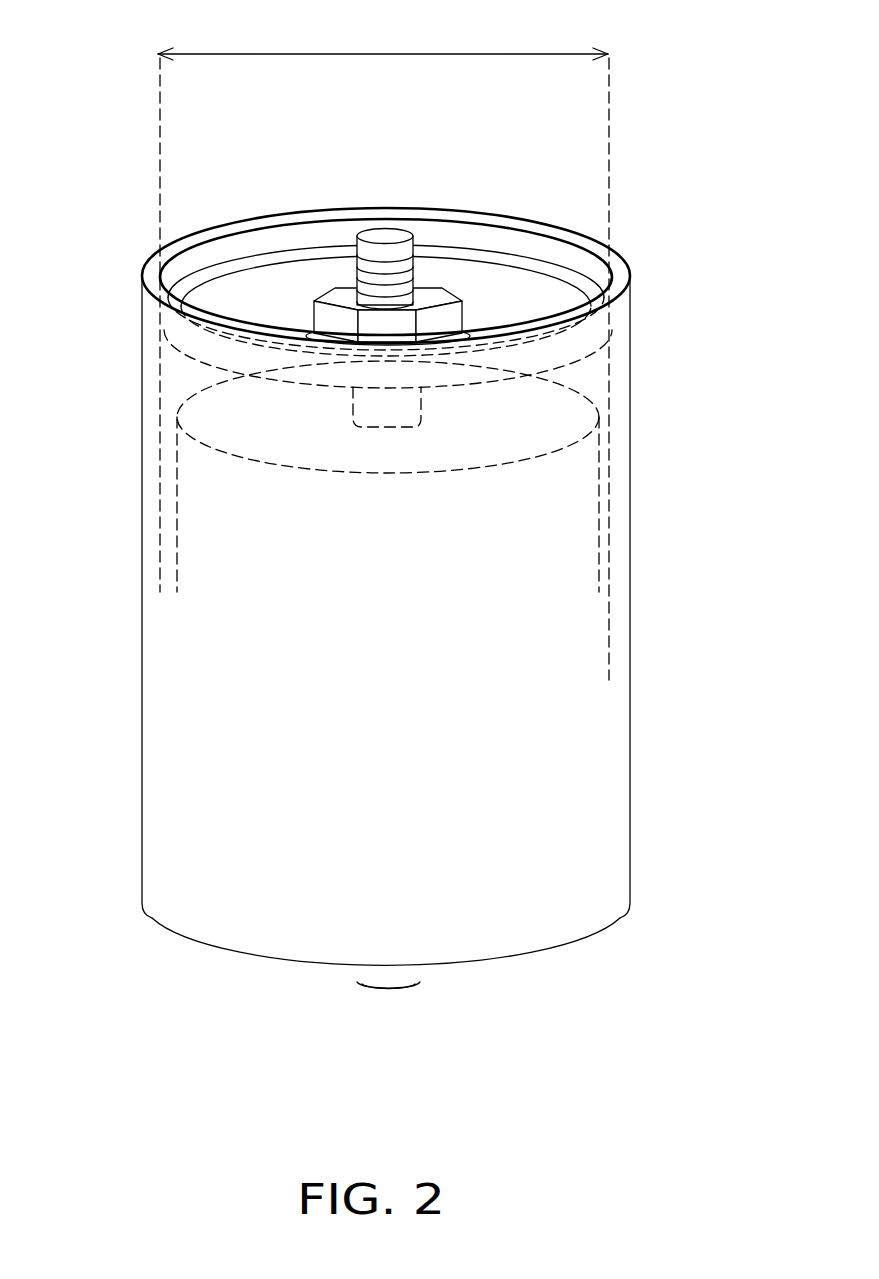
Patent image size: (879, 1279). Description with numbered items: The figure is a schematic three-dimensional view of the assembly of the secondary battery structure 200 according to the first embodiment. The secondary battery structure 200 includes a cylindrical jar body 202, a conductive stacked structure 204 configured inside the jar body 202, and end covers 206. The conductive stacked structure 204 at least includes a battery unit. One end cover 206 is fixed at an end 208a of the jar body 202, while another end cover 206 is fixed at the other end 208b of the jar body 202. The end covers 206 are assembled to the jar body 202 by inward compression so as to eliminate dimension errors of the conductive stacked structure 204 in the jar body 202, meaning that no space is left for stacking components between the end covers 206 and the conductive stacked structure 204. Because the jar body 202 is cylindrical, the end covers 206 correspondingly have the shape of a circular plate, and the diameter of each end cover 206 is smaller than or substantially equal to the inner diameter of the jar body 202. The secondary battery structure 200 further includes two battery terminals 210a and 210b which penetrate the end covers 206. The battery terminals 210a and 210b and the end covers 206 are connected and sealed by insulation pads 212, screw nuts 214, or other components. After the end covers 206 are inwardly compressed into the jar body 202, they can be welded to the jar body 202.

The secondary battery structure 200 is at (140, 208).
The jar body 202 is at (632, 650).
The conductive stacked structure 204 is at (603, 485).
The end cover 206 is at (213, 268).
The end of the jar body 208a is at (478, 196).
The other end of the jar body 208b is at (500, 987).
The battery terminal 210a is at (385, 234).
The battery terminal 210b is at (388, 990).
The insulation pad 212 is at (307, 340).
The screw nut 214 is at (450, 315).